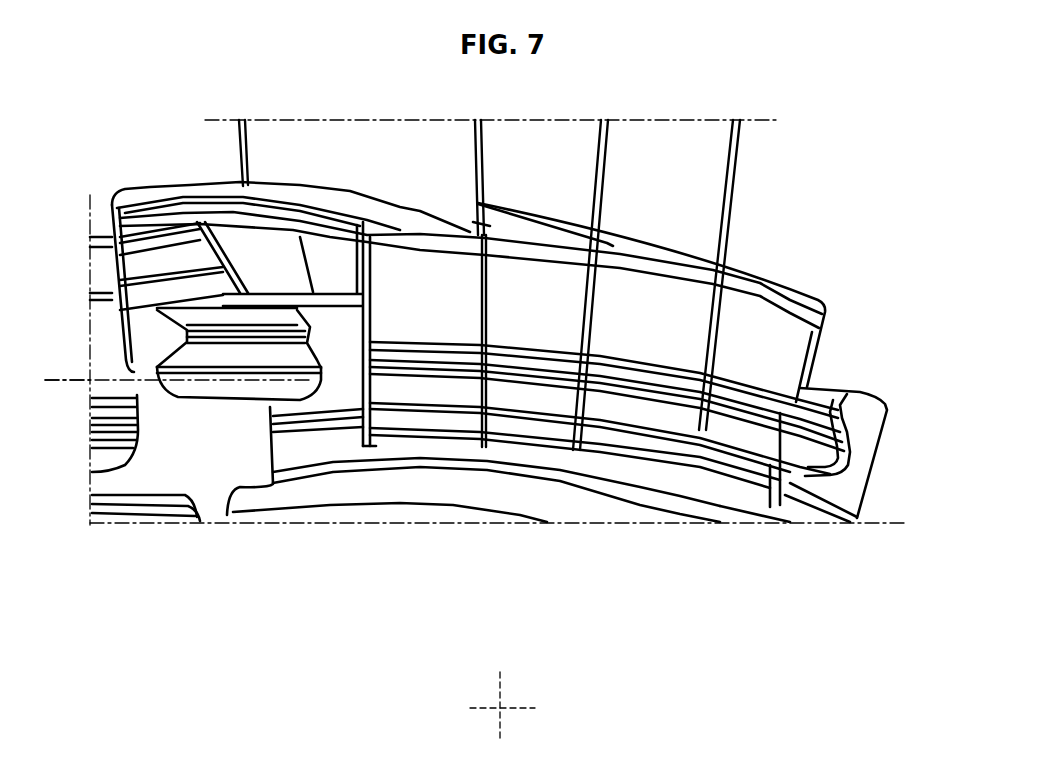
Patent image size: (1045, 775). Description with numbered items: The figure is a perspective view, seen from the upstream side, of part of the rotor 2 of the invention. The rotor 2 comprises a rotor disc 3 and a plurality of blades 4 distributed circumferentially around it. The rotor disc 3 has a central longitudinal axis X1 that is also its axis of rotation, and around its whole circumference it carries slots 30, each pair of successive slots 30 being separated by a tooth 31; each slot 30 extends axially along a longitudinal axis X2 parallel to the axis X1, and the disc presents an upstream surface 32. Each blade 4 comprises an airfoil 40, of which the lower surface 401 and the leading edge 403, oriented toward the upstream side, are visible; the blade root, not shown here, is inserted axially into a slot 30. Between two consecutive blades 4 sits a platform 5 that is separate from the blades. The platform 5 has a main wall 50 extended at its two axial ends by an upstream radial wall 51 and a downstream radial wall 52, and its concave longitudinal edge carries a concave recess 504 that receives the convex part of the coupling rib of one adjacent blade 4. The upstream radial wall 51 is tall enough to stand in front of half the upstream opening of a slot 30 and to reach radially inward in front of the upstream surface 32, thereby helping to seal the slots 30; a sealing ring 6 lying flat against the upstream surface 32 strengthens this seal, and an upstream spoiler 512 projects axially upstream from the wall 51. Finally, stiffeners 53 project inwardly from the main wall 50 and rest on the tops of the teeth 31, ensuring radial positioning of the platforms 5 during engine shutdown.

The rotor 2 is at (897, 230).
The rotor disc 3 is at (898, 424).
The blade 4 is at (745, 197).
The platform 5 is at (775, 261).
The sealing ring 6 is at (845, 505).
The slot 30 is at (826, 389).
The tooth 31 is at (330, 332).
The upstream surface 32 is at (843, 488).
The airfoil 40 is at (408, 165).
The main wall 50 is at (280, 193).
The upstream radial wall 51 is at (427, 302).
The downstream radial wall 52 is at (120, 260).
The stiffener 53 is at (255, 248).
The lower surface 401 is at (366, 168).
The leading edge 403 is at (480, 168).
The concave recess 504 is at (166, 207).
The upstream spoiler 512 is at (470, 360).
The central longitudinal axis X1 is at (500, 708).
The longitudinal axis of slot X2 is at (63, 381).